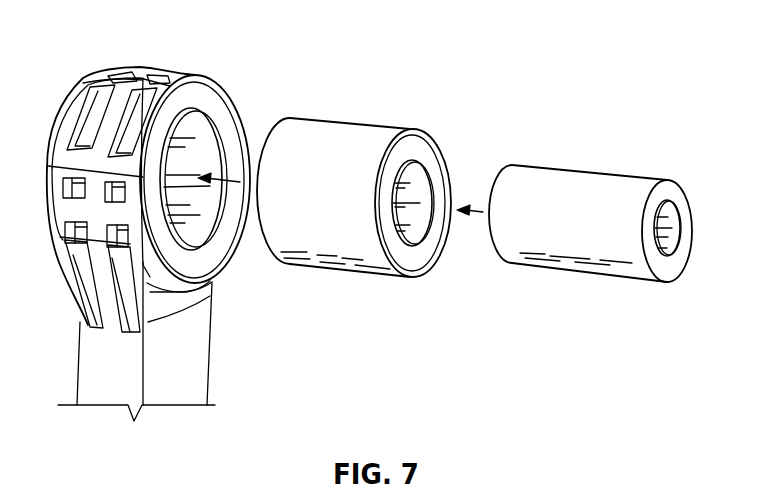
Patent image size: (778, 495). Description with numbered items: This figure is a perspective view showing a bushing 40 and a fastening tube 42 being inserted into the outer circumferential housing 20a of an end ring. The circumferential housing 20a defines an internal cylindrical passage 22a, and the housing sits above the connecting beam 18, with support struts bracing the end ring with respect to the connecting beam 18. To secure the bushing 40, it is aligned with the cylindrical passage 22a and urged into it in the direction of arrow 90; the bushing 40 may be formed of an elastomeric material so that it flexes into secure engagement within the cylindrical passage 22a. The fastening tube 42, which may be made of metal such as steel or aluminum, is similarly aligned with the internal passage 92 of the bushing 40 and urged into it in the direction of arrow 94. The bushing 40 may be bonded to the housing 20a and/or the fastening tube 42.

The outer circumferential housing 20a is at (108, 70).
The internal cylindrical passage 22a is at (196, 126).
The arrow 90 is at (214, 200).
The connecting beam 18 is at (195, 385).
The bushing 40 is at (355, 118).
The internal passage 92 is at (449, 163).
The arrow 94 is at (477, 213).
The fastening tube 42 is at (612, 170).